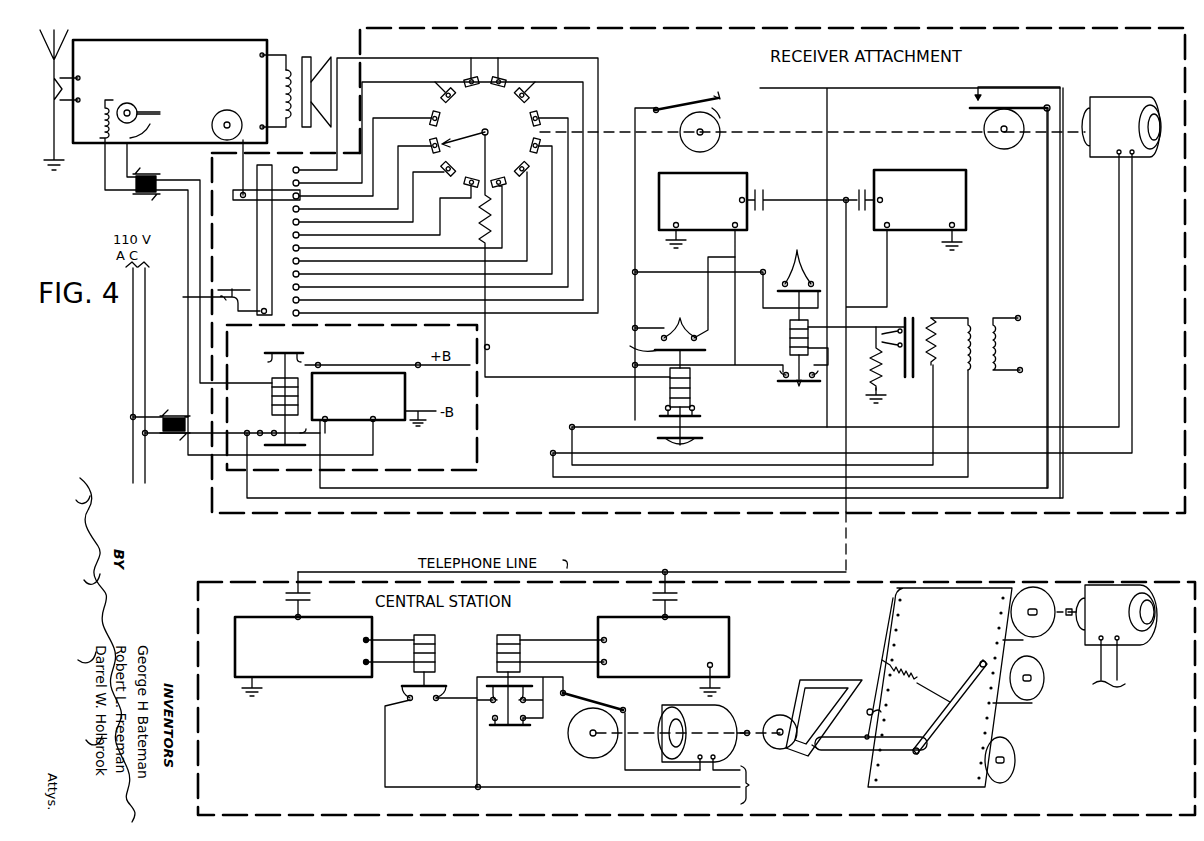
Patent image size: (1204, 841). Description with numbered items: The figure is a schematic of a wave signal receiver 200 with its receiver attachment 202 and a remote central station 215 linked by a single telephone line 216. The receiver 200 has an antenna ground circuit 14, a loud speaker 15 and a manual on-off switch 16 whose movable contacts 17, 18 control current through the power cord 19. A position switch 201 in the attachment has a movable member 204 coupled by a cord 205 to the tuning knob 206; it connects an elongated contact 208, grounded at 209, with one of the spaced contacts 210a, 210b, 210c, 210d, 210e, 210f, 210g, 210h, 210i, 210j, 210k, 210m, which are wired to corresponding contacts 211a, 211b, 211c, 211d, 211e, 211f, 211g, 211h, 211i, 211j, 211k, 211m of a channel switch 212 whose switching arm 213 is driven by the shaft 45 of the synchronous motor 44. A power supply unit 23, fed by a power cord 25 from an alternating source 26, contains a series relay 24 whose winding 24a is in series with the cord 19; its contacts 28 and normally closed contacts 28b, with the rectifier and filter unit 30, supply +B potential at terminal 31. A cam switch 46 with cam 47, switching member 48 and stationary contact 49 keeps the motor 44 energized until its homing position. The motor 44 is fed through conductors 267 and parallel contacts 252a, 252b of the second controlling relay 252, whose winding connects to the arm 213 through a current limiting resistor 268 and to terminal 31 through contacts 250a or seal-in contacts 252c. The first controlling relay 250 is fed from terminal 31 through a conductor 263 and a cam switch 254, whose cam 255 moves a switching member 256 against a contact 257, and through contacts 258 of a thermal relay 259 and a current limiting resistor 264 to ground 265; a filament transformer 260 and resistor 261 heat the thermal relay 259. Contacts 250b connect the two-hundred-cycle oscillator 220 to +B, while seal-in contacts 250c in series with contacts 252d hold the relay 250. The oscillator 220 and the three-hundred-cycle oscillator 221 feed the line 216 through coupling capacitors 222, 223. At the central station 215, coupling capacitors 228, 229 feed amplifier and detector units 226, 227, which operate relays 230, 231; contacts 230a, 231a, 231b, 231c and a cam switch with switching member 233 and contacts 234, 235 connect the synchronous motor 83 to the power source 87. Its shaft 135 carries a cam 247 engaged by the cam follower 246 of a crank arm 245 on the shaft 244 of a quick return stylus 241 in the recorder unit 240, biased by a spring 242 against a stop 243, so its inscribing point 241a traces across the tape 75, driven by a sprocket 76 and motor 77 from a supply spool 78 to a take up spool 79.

The antenna ground circuit 14 is at (56, 100).
The loud speaker 15 is at (307, 54).
The manual on-off switch 16 is at (134, 90).
The movable contact 17 is at (168, 114).
The movable contact 18 is at (151, 133).
The power cord 19 is at (189, 218).
The power supply unit 23 is at (477, 333).
The series relay 24 is at (266, 415).
The relay winding 24a is at (272, 389).
The power cord 25 is at (188, 439).
The source of alternating potential 26 is at (134, 346).
The normally open contacts 28 is at (308, 432).
The normally closed contacts 28b is at (268, 356).
The rectifier and filter unit 30 is at (405, 400).
The +B potential terminal 31 is at (408, 364).
The synchronous motor and gear train unit 44 is at (1097, 158).
The motor shaft 45 is at (902, 126).
The cam operated switch 46 is at (1018, 84).
The cam 47 is at (986, 142).
The switching member 48 is at (1010, 106).
The stationary contact 49 is at (976, 101).
The recording element 75 is at (888, 640).
The rotatable sprocket 76 is at (1039, 606).
The synchronous motor 77 is at (1146, 605).
The supply spool 78 is at (1012, 752).
The take up spool 79 is at (1034, 684).
The synchronous motor and gear train unit 83 is at (696, 702).
The power source 87 is at (728, 786).
The shaft 135 is at (746, 726).
The wave signal receiver 200 is at (138, 46).
The position switch 201 is at (234, 281).
The receiver attachment 202 is at (665, 29).
The movable switch member 204 is at (251, 202).
The connecting means 205 is at (216, 152).
The tuning knob 206 is at (240, 101).
The elongated contact 208 is at (258, 246).
The ground 209 is at (209, 301).
The spaced contact 210a is at (445, 185).
The spaced contact 210b is at (438, 191).
The spaced contact 210c is at (362, 161).
The spaced contact 210d is at (362, 181).
The spaced contact 210e is at (368, 201).
The spaced contact 210f is at (382, 214).
The spaced contact 210g is at (397, 221).
The spaced contact 210h is at (410, 220).
The spaced contact 210i is at (422, 214).
The spaced contact 210j is at (430, 206).
The spaced contact 210k is at (438, 300).
The spaced contact 210m is at (445, 313).
The channel switch contact 211a is at (473, 73).
The channel switch contact 211b is at (449, 90).
The channel switch contact 211c is at (434, 116).
The channel switch contact 211d is at (433, 143).
The channel switch contact 211e is at (446, 171).
The channel switch contact 211f is at (470, 189).
The channel switch contact 211g is at (499, 180).
The channel switch contact 211h is at (524, 166).
The channel switch contact 211i is at (533, 142).
The channel switch contact 211j is at (539, 116).
The channel switch contact 211k is at (524, 92).
The channel switch contact 211m is at (500, 72).
The channel switch 212 is at (493, 114).
The switching arm 213 is at (468, 144).
The central station 215 is at (912, 578).
The telephone line 216 is at (298, 572).
The two-hundred-cycle oscillator 220 is at (915, 170).
The three-hundred-cycle oscillator 221 is at (682, 173).
The coupling capacitor 222 is at (848, 188).
The coupling capacitor 223 is at (776, 193).
The three-hundred-cycle amplifier and detector unit 226 is at (367, 617).
The two-hundred-cycle amplifier and detector unit 227 is at (638, 617).
The coupling capacitor 228 is at (285, 600).
The coupling capacitor 229 is at (678, 596).
The relay 230 is at (446, 633).
The relay contacts 230a is at (410, 698).
The relay 231 is at (531, 633).
The relay contacts 231a is at (491, 704).
The relay contacts 231b is at (496, 686).
The relay contacts 231c is at (510, 728).
The switching member 233 is at (607, 710).
The contact 234 is at (563, 690).
The stationary contact member 235 is at (565, 712).
The recorder unit 240 is at (880, 613).
The quick return stylus 241 is at (952, 722).
The inscribing point 241a is at (984, 661).
The spring 242 is at (920, 672).
The stop 243 is at (881, 712).
The shaft 244 is at (878, 740).
The crank arm 245 is at (818, 751).
The cam follower 246 is at (840, 682).
The cam 247 is at (780, 744).
The first controlling relay 250 is at (790, 323).
The relay contacts 250a is at (795, 261).
The relay contacts 250b is at (820, 293).
The seal-in contacts 250c is at (799, 389).
The second controlling relay 252 is at (668, 390).
The relay contacts 252a is at (700, 416).
The relay contacts 252b is at (702, 440).
The seal-in contacts 252c is at (684, 312).
The relay contacts 252d is at (624, 342).
The cam switch 254 is at (680, 86).
The cam 255 is at (722, 131).
The switching member 256 is at (722, 106).
The contact 257 is at (724, 95).
The thermal relay contacts 258 is at (877, 339).
The thermal relay 259 is at (925, 305).
The filament transformer 260 is at (993, 305).
The resistor 261 is at (934, 372).
The conductor 263 is at (827, 94).
The current limiting resistor 264 is at (870, 365).
The ground 265 is at (425, 426).
The conductors 267 is at (532, 462).
The current limiting resistor 268 is at (482, 222).